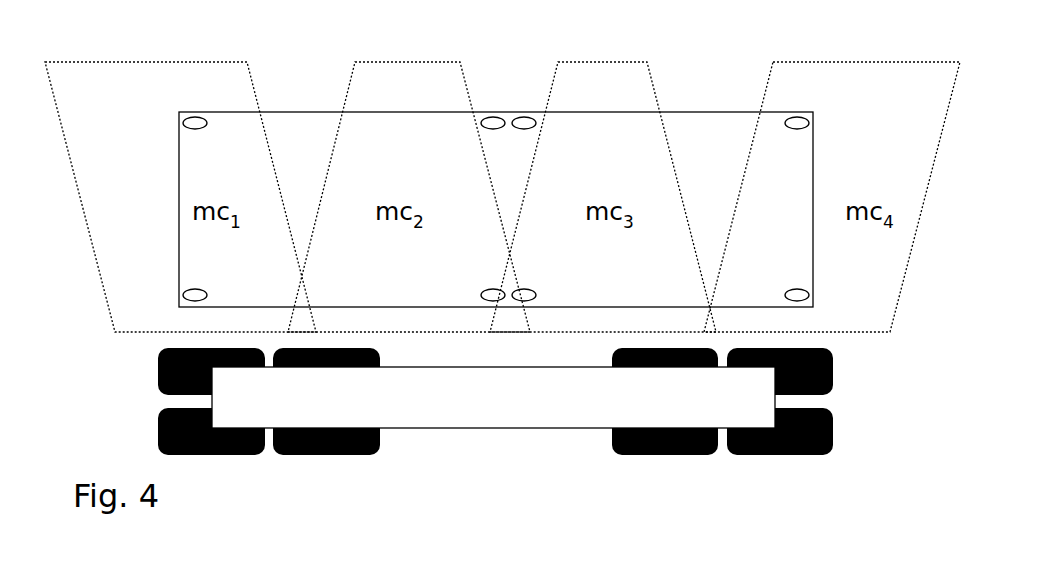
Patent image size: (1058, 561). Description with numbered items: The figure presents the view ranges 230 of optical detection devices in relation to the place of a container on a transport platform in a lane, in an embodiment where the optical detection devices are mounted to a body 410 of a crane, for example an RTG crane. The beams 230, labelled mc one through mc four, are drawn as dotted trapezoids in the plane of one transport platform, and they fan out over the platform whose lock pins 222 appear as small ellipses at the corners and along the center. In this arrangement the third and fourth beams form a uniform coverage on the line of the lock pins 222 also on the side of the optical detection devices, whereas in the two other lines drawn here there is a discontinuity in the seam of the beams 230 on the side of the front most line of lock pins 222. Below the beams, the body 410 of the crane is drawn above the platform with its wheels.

The view range 230 is at (155, 65).
The lock pin 222 is at (183, 128).
The body of a crane 410 is at (475, 427).